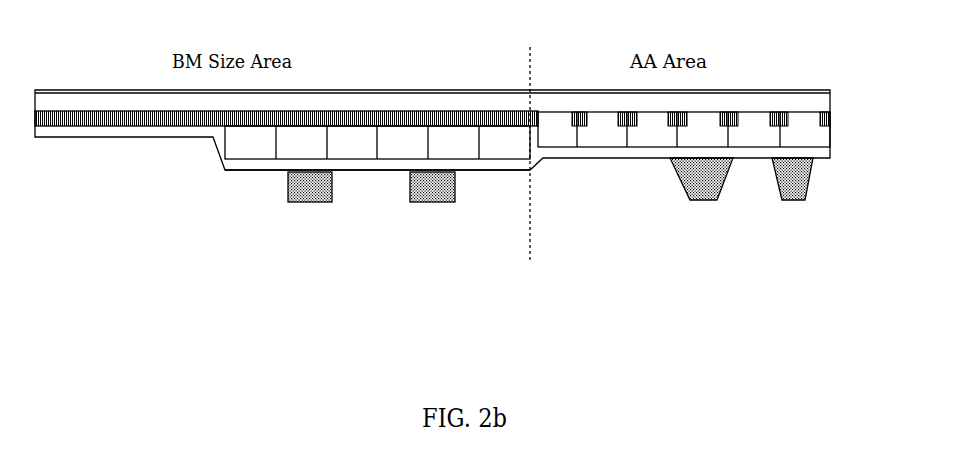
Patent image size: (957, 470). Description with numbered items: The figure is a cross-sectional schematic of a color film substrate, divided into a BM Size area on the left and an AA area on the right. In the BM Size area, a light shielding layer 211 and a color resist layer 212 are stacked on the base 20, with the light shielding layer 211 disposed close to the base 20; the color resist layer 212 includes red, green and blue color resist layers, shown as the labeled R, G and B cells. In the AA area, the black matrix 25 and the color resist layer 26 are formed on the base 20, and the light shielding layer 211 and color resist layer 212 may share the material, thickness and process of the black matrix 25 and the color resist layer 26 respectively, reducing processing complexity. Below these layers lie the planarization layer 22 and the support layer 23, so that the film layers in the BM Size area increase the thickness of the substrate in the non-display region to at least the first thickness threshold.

The base 20 is at (465, 100).
The light shielding layer 211 is at (315, 112).
The color resist layer 212 is at (363, 142).
The planarization layer 22 is at (370, 167).
The support layer 23 is at (305, 186).
The black matrix 25 is at (738, 117).
The color resist layer 26 is at (795, 118).